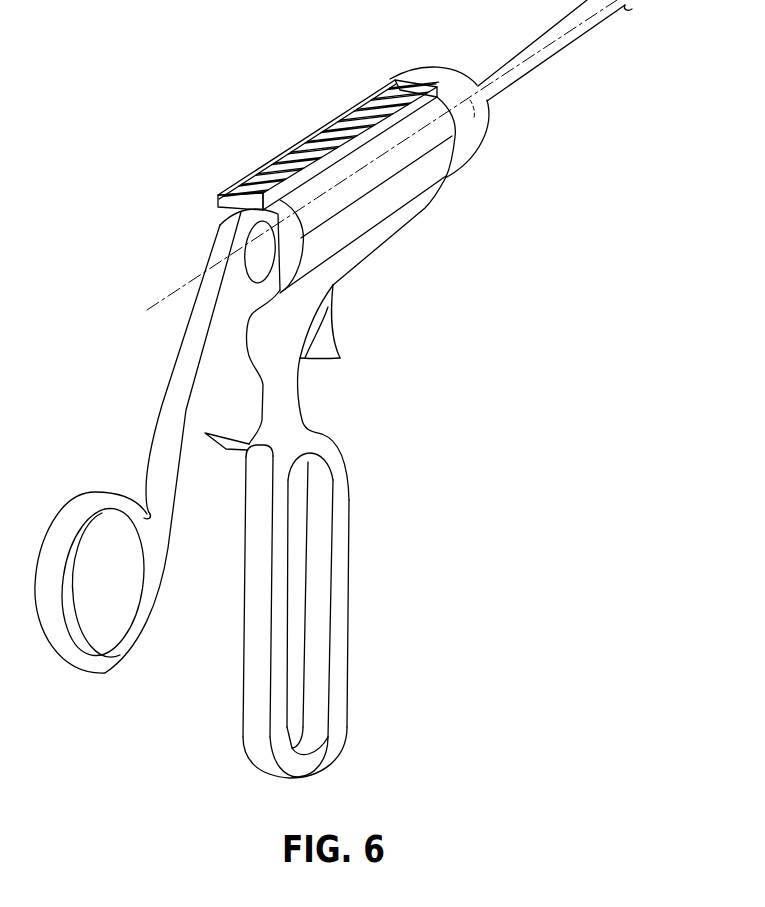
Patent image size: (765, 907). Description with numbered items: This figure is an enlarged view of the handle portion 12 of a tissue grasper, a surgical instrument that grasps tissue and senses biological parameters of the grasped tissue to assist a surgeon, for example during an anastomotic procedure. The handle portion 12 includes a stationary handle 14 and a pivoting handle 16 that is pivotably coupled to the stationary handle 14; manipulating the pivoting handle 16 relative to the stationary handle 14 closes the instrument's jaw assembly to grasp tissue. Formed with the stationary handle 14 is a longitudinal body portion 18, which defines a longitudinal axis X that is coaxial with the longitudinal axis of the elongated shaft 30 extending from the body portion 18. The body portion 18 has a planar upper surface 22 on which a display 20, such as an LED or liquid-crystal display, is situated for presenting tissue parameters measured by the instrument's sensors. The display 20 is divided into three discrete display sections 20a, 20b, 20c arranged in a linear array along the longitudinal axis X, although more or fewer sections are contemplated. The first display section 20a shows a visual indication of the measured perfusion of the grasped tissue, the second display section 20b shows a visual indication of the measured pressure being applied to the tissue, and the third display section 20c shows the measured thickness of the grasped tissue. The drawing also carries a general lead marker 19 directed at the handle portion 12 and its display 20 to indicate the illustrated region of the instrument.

The handle portion 12 is at (150, 369).
The stationary handle 14 is at (346, 543).
The pivoting handle 16 is at (150, 456).
The body portion 18 is at (433, 167).
The actuator assembly 19 is at (128, 124).
The display 20 is at (288, 111).
The first display section 20a is at (273, 177).
The second display section 20b is at (328, 136).
The third display section 20c is at (382, 98).
The planar upper surface 22 is at (217, 202).
The elongated shaft 30 is at (541, 66).
The longitudinal axis x is at (188, 282).